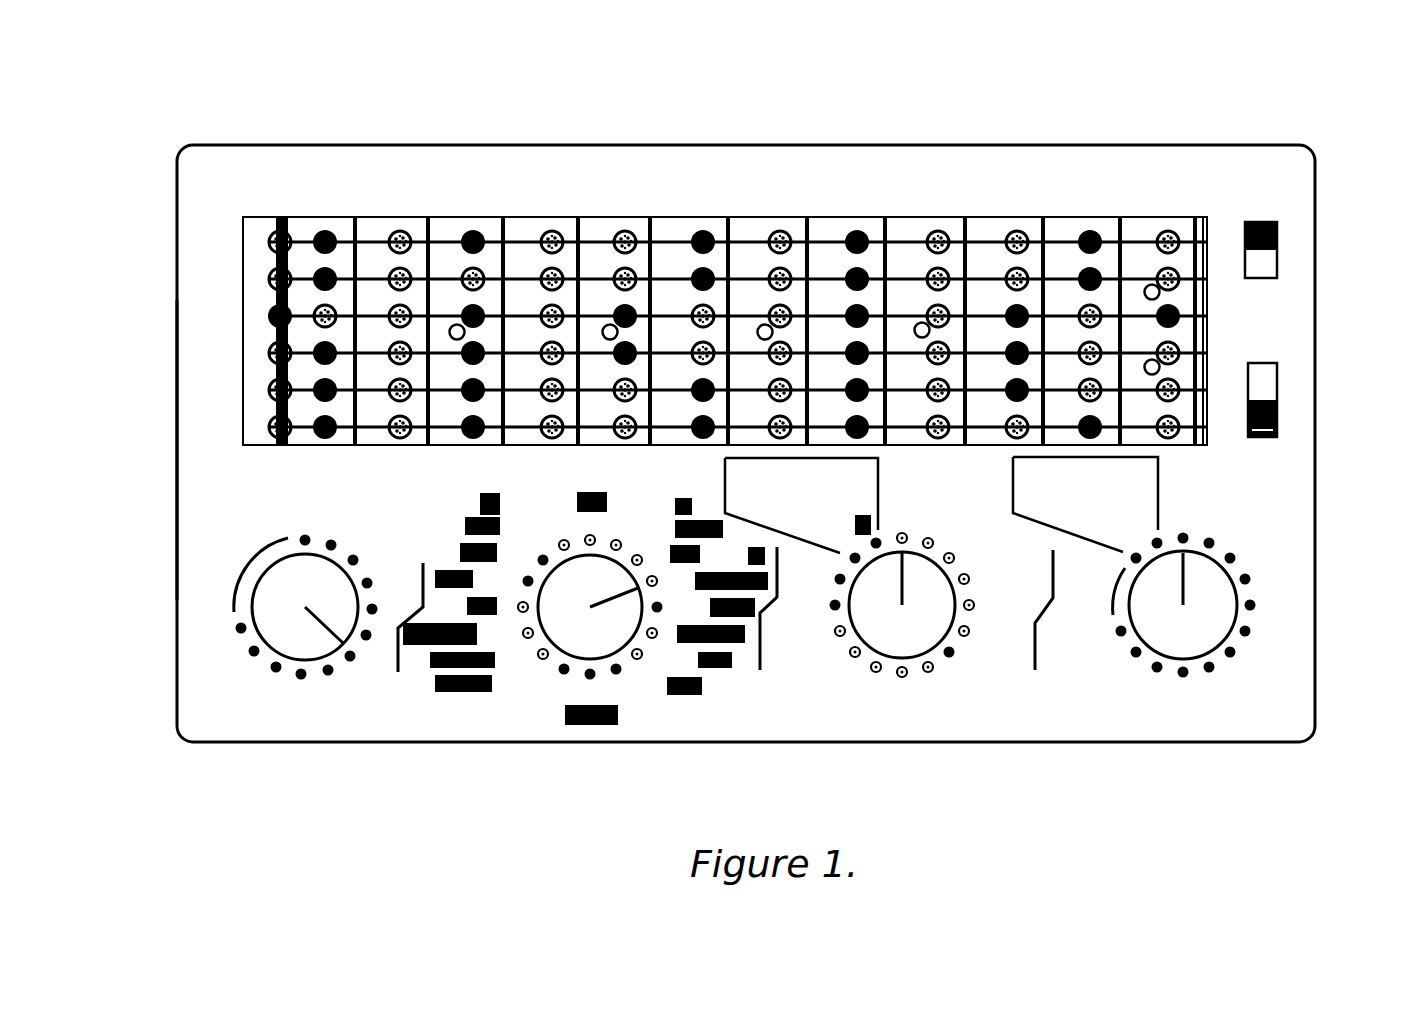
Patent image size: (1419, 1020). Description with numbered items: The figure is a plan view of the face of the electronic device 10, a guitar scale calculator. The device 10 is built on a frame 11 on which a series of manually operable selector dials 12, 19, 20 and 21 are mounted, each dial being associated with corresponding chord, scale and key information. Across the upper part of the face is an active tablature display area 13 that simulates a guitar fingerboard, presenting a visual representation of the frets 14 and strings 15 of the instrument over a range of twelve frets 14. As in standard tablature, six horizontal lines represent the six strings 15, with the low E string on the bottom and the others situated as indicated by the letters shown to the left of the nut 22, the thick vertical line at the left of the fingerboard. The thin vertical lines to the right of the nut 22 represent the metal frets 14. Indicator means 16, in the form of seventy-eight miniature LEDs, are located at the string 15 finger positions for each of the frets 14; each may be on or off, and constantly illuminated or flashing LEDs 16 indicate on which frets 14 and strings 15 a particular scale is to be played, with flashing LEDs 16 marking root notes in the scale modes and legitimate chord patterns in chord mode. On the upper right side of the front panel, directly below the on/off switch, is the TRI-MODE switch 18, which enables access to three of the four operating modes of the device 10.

The electronic device 10 is at (683, 108).
The frame 11 is at (195, 343).
The selector dial 12 is at (290, 640).
The active tablature display area 13 is at (907, 263).
The frets 14 is at (348, 272).
The strings 15 is at (521, 275).
The indicator means (LEDs) 16 is at (1085, 232).
The TRI-MODE switch 18 is at (1277, 422).
The selector dial 19 is at (580, 642).
The selector dial 20 is at (890, 643).
The selector dial 21 is at (1170, 638).
The nut 22 is at (272, 297).